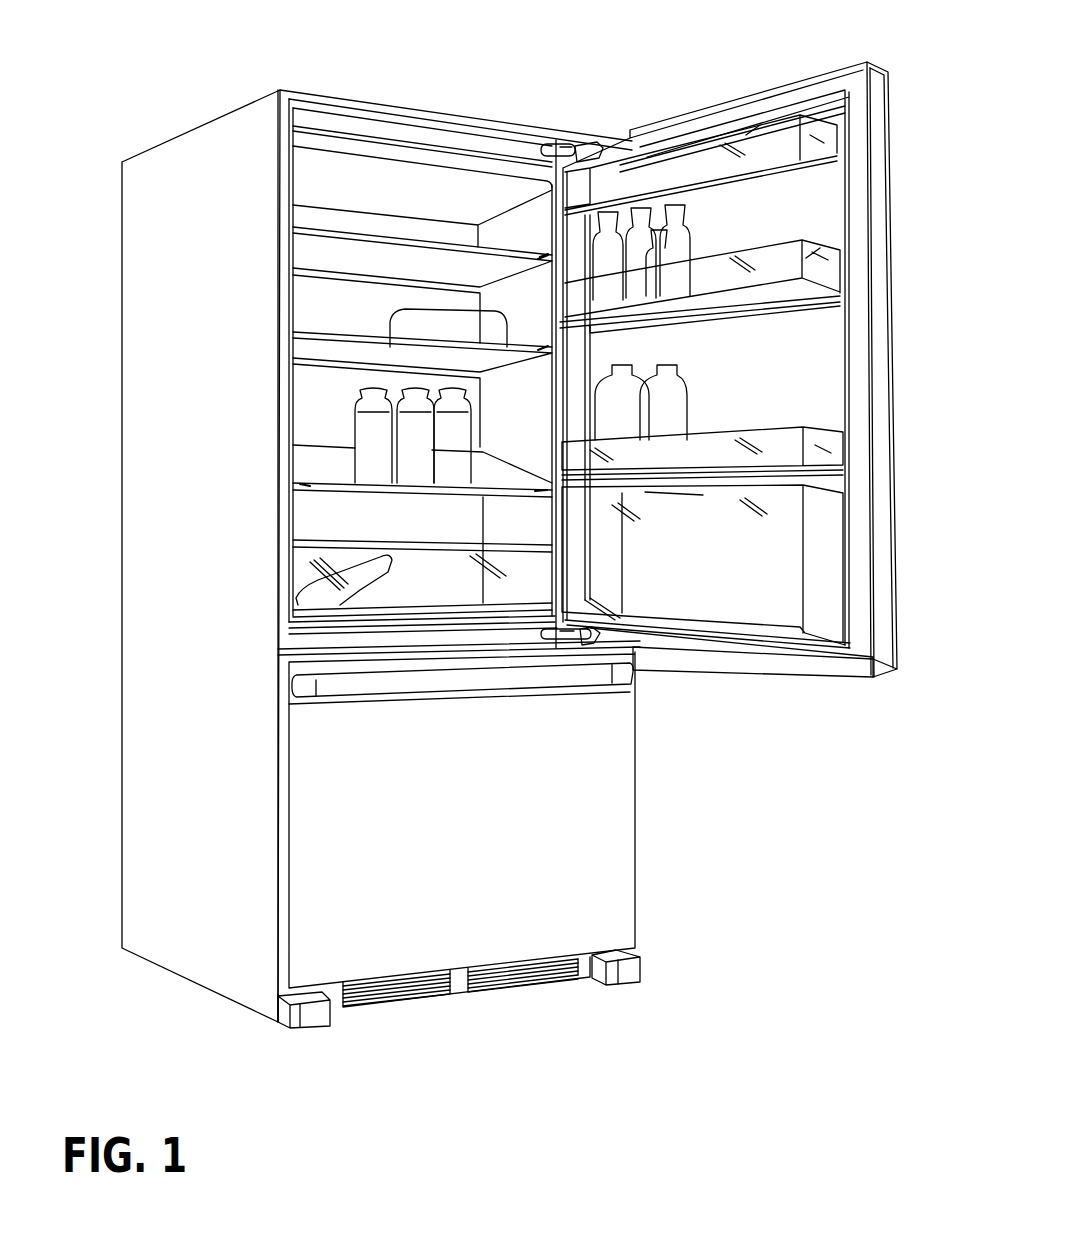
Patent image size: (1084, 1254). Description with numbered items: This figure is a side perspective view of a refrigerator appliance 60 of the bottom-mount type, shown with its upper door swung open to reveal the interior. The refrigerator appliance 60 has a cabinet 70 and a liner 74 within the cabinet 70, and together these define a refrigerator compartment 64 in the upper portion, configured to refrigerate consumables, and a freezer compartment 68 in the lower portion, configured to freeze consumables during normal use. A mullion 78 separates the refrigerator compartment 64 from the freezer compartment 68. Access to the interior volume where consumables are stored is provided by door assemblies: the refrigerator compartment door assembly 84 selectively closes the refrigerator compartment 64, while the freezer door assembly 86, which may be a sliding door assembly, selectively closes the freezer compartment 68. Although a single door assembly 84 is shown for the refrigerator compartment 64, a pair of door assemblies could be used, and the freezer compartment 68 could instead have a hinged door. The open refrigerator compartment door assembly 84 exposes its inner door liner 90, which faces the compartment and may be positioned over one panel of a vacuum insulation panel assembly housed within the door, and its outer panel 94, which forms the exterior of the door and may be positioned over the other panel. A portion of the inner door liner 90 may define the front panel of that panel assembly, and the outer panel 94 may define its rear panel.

The refrigerator appliance 60 is at (539, 102).
The refrigerator compartment 64 is at (308, 315).
The freezer compartment 68 is at (552, 834).
The cabinet 70 is at (152, 747).
The liner 74 is at (331, 222).
The mullion 78 is at (330, 645).
The refrigerator compartment door assembly 84 is at (873, 73).
The freezer door assembly 86 is at (345, 823).
The inner door liner 90 is at (780, 362).
The outer panel 94 is at (887, 183).